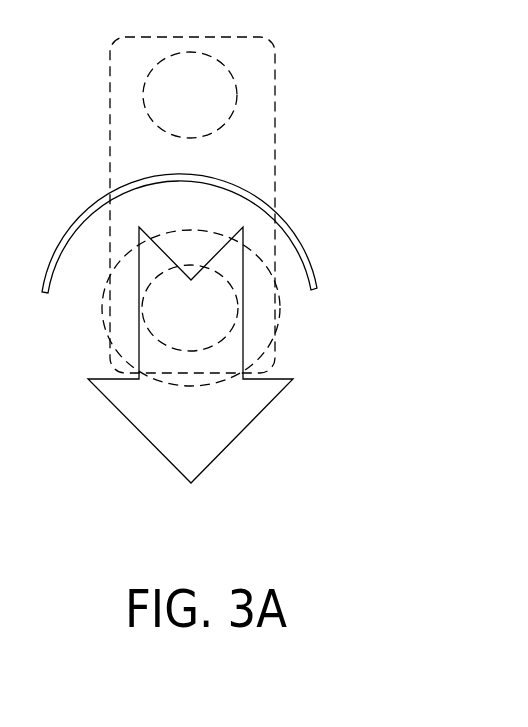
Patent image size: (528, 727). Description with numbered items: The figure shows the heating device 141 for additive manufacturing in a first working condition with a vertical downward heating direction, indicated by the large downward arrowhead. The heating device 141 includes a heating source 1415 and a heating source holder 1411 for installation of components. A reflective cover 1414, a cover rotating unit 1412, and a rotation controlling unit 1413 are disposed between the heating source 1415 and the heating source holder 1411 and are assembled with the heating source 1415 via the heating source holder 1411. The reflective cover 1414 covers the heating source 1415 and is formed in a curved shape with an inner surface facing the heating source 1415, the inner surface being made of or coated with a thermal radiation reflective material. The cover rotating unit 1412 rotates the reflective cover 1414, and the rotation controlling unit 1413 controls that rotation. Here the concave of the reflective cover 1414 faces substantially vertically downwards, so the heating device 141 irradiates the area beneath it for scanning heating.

The heating device 141 is at (267, 260).
The heating source holder 1411 is at (282, 75).
The rotation controlling unit 1413 is at (237, 115).
The reflective cover 1414 is at (320, 249).
The cover rotating unit 1412 is at (288, 307).
The heating source 1415 is at (238, 333).